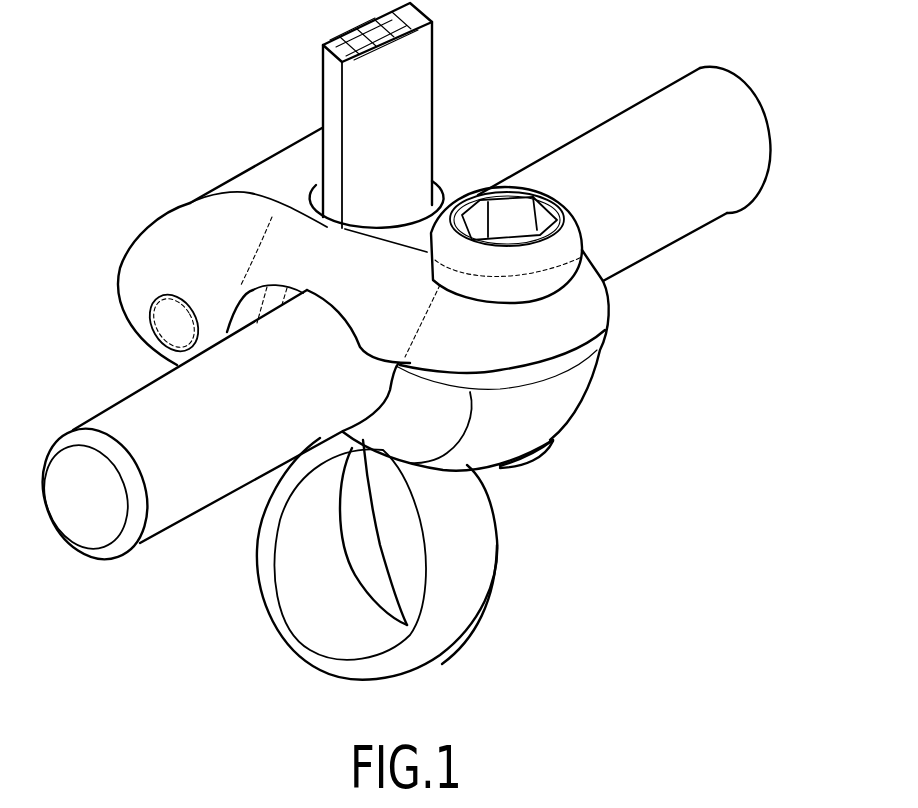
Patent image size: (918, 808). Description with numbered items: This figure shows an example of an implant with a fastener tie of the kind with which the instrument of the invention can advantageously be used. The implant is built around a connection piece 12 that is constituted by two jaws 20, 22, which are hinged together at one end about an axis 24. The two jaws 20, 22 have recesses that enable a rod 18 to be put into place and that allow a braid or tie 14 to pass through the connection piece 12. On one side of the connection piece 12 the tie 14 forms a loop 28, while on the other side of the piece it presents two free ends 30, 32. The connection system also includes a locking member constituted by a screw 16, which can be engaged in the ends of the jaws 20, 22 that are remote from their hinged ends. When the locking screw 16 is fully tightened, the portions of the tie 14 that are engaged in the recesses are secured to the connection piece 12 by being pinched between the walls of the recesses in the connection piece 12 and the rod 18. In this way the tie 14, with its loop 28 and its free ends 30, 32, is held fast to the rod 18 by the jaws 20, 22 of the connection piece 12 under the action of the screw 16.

The connection piece 12 is at (616, 360).
The braid or tie 14 is at (503, 567).
The screw 16 is at (507, 213).
The rod 18 is at (737, 121).
The jaw 20 is at (552, 410).
The jaw 22 is at (598, 302).
The axis 24 is at (164, 333).
The loop 28 is at (440, 640).
The free end 30 is at (330, 92).
The free end 32 is at (416, 64).